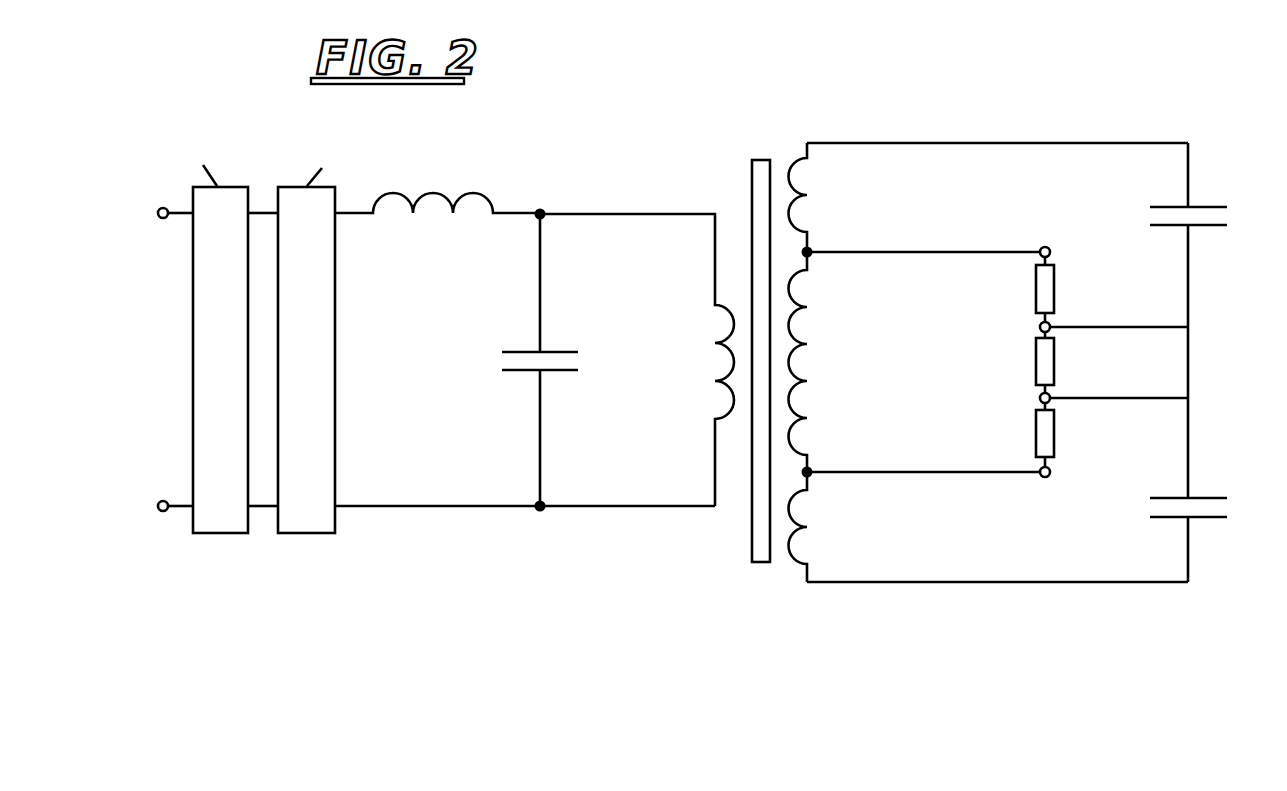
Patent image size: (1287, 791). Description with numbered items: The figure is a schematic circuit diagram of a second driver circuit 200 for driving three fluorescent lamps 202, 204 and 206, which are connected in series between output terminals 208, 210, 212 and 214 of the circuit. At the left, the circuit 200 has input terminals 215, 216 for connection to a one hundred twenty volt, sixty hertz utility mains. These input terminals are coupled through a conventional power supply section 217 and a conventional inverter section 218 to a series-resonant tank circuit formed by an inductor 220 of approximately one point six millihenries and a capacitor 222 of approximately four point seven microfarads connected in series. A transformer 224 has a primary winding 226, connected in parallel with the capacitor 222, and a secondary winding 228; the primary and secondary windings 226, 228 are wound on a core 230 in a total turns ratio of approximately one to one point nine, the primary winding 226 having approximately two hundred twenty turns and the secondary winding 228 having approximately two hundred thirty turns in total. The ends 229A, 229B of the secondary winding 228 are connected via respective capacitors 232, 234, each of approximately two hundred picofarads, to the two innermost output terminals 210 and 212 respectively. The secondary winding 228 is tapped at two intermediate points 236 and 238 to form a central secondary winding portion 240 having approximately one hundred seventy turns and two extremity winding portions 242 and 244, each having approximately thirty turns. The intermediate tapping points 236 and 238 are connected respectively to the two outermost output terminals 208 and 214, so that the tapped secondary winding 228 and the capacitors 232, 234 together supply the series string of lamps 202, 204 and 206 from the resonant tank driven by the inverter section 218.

The second driver circuit 200 is at (352, 638).
The fluorescent lamp 202 is at (1055, 288).
The fluorescent lamp 204 is at (1055, 367).
The fluorescent lamp 206 is at (1055, 437).
The output terminal 208 is at (1048, 247).
The output terminal 210 is at (1040, 323).
The output terminal 212 is at (1040, 400).
The output terminal 214 is at (1048, 477).
The input terminal 215 is at (160, 219).
The input terminal 216 is at (160, 499).
The power supply section 217 is at (199, 322).
The inverter section 218 is at (322, 336).
The inductor 220 is at (413, 218).
The capacitor 222 is at (520, 372).
The transformer 224 is at (761, 600).
The primary winding 226 is at (723, 347).
The secondary winding 228 is at (797, 94).
The end of secondary winding 229A is at (807, 142).
The end of secondary winding 229B is at (807, 582).
The core 230 is at (762, 158).
The capacitor 232 is at (1208, 203).
The capacitor 234 is at (1208, 518).
The intermediate tapping point 236 is at (810, 257).
The intermediate tapping point 238 is at (808, 465).
The central secondary winding portion 240 is at (800, 380).
The extremity winding portion 242 is at (800, 195).
The extremity winding portion 244 is at (803, 527).